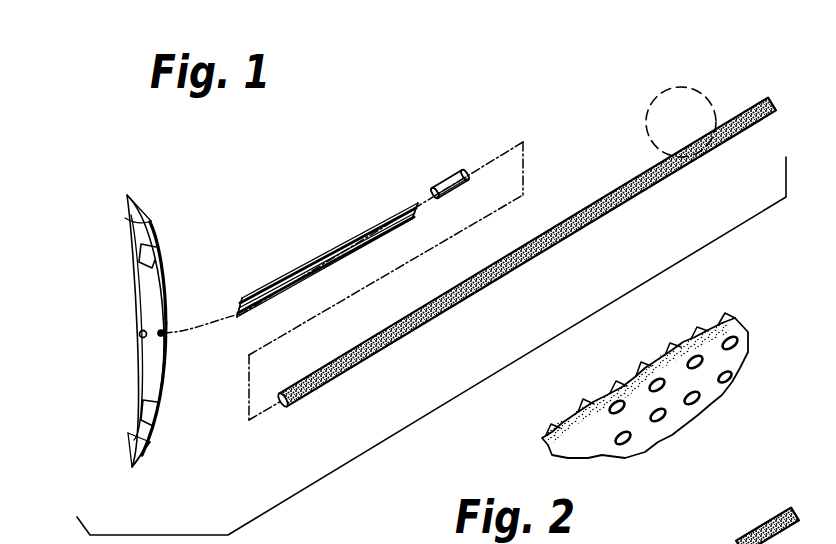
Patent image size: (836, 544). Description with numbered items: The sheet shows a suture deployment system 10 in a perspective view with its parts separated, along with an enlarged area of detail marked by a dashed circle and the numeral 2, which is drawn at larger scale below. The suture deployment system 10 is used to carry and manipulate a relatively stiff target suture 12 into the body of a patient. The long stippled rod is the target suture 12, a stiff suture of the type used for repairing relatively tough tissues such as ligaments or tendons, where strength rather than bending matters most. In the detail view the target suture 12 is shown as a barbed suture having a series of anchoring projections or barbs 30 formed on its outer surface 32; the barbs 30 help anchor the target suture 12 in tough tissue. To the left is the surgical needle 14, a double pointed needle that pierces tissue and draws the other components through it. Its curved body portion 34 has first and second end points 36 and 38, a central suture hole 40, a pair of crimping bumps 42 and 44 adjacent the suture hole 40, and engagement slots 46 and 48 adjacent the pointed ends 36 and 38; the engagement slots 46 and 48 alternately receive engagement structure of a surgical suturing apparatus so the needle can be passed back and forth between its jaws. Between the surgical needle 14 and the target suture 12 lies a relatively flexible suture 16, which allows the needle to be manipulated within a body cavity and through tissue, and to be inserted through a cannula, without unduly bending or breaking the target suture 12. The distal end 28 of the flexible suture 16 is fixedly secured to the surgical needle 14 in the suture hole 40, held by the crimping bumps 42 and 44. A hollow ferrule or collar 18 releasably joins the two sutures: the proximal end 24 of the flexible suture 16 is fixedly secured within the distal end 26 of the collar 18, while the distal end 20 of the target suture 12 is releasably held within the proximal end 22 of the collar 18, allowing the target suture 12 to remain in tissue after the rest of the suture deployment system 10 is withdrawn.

In FIG. 1, the detail region shown in FIG. 2 is at (700, 86).
In FIG. 1, the suture deployment system 10 is at (386, 486).
In FIG. 1, the target suture 12 is at (548, 252).
In FIG. 1, the surgical needle 14 is at (147, 297).
In FIG. 1, the flexible suture 16 is at (320, 258).
In FIG. 1, the collar 18 is at (450, 183).
In FIG. 1, the distal end of target suture 20 is at (290, 401).
In FIG. 1, the proximal end of collar 22 is at (467, 172).
In FIG. 1, the proximal end of flexible suture 24 is at (408, 202).
In FIG. 1, the distal end of collar 26 is at (437, 200).
In FIG. 1, the distal end of flexible suture 28 is at (250, 298).
In FIG. 2, the barbs 30 is at (692, 338).
In FIG. 2, the outer surface 32 is at (710, 382).
In FIG. 1, the curved body portion 34 is at (164, 368).
In FIG. 1, the first end point 36 is at (126, 212).
In FIG. 1, the second end point 38 is at (143, 452).
In FIG. 1, the suture hole 40 is at (163, 331).
In FIG. 1, the crimping bump 42 is at (139, 337).
In FIG. 1, the crimping bump 44 is at (165, 323).
In FIG. 1, the engagement slot 46 is at (152, 249).
In FIG. 1, the engagement slot 48 is at (157, 411).